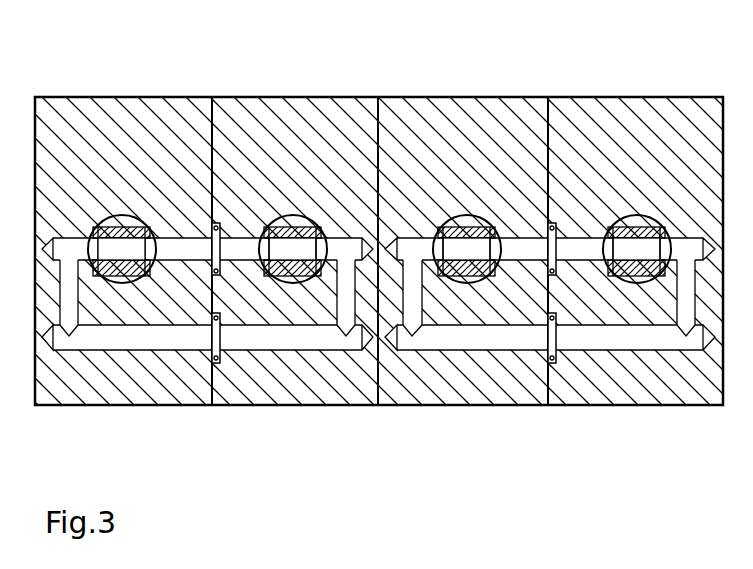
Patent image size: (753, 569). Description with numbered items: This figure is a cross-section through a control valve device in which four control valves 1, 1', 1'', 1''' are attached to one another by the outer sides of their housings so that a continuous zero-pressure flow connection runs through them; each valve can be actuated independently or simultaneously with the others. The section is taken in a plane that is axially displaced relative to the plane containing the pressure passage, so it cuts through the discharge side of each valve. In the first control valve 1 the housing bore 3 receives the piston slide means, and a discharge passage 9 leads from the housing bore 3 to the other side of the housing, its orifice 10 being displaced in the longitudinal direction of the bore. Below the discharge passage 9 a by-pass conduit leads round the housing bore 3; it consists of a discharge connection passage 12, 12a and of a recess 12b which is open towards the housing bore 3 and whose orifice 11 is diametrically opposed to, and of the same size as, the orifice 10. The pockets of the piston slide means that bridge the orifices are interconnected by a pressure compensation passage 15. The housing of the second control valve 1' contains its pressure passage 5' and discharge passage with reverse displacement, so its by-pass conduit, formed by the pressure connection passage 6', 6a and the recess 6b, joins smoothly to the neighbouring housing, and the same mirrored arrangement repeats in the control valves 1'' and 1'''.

The control valve 1 is at (123, 203).
The control valve 1' is at (295, 203).
The control valve 1'' is at (463, 203).
The control valve 1''' is at (635, 203).
The housing bore 3 is at (122, 213).
The pressure passage 5' is at (231, 205).
The pressure connection passage 6' is at (296, 401).
The pressure connection passage 6a is at (347, 297).
The recess 6b is at (347, 247).
The discharge passage 9 is at (187, 250).
The orifice 10 is at (153, 228).
The orifice 11 is at (82, 230).
The discharge connection passage 12 is at (173, 342).
The discharge connection passage 12a is at (72, 300).
The recess 12b is at (65, 245).
The pressure compensation passage 15 is at (123, 250).